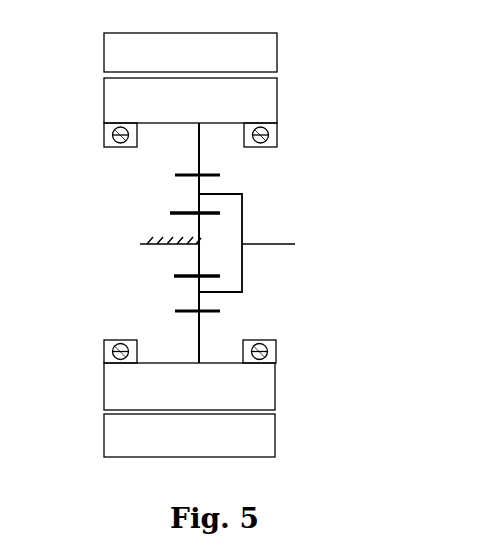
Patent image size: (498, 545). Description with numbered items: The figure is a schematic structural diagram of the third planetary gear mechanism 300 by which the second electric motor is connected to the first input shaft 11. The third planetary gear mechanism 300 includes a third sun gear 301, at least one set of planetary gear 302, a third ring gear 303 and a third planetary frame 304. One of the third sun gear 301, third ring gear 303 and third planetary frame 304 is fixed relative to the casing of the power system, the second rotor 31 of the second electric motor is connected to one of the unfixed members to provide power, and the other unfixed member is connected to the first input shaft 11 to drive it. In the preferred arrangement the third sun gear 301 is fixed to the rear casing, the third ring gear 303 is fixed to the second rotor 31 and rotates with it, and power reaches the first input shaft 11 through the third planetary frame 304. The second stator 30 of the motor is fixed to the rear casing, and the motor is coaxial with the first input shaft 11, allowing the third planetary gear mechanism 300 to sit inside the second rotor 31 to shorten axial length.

The third planetary gear mechanism 300 is at (211, 243).
The third sun gear 301 is at (197, 226).
The planetary gear 302 is at (187, 176).
The third ring gear 303 is at (185, 312).
The third planetary frame 304 is at (243, 265).
The first input shaft 11 is at (272, 244).
The second rotor 31 is at (137, 388).
The second stator 30 is at (137, 445).